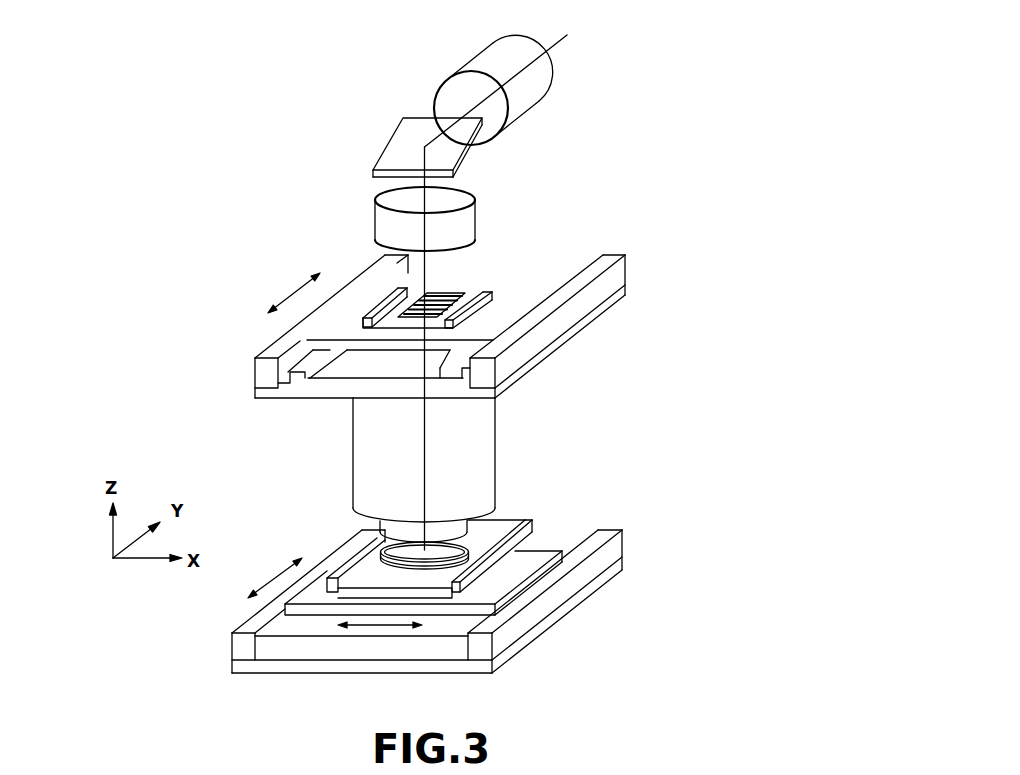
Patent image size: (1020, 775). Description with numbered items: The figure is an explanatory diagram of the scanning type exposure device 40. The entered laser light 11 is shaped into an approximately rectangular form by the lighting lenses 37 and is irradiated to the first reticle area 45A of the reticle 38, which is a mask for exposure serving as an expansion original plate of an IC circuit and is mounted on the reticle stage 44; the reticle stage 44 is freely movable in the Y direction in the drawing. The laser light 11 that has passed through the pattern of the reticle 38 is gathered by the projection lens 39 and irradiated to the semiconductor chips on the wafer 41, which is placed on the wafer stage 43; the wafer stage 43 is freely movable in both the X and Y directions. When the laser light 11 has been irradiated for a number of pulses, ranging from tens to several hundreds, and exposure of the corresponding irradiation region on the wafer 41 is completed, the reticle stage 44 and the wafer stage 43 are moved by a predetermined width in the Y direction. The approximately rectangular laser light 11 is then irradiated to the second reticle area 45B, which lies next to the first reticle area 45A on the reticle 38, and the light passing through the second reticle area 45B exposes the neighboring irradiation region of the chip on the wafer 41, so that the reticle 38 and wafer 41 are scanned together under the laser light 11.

The scanning type exposure device 40 is at (680, 113).
The laser light 11 is at (568, 36).
The lighting lenses 37 is at (475, 221).
The reticle stage 44 is at (540, 285).
The first reticle area 45A is at (440, 297).
The reticle 38 is at (498, 298).
The second reticle area 45B is at (458, 317).
The projection lens 39 is at (483, 440).
The wafer 41 is at (503, 514).
The wafer stage 43 is at (328, 568).